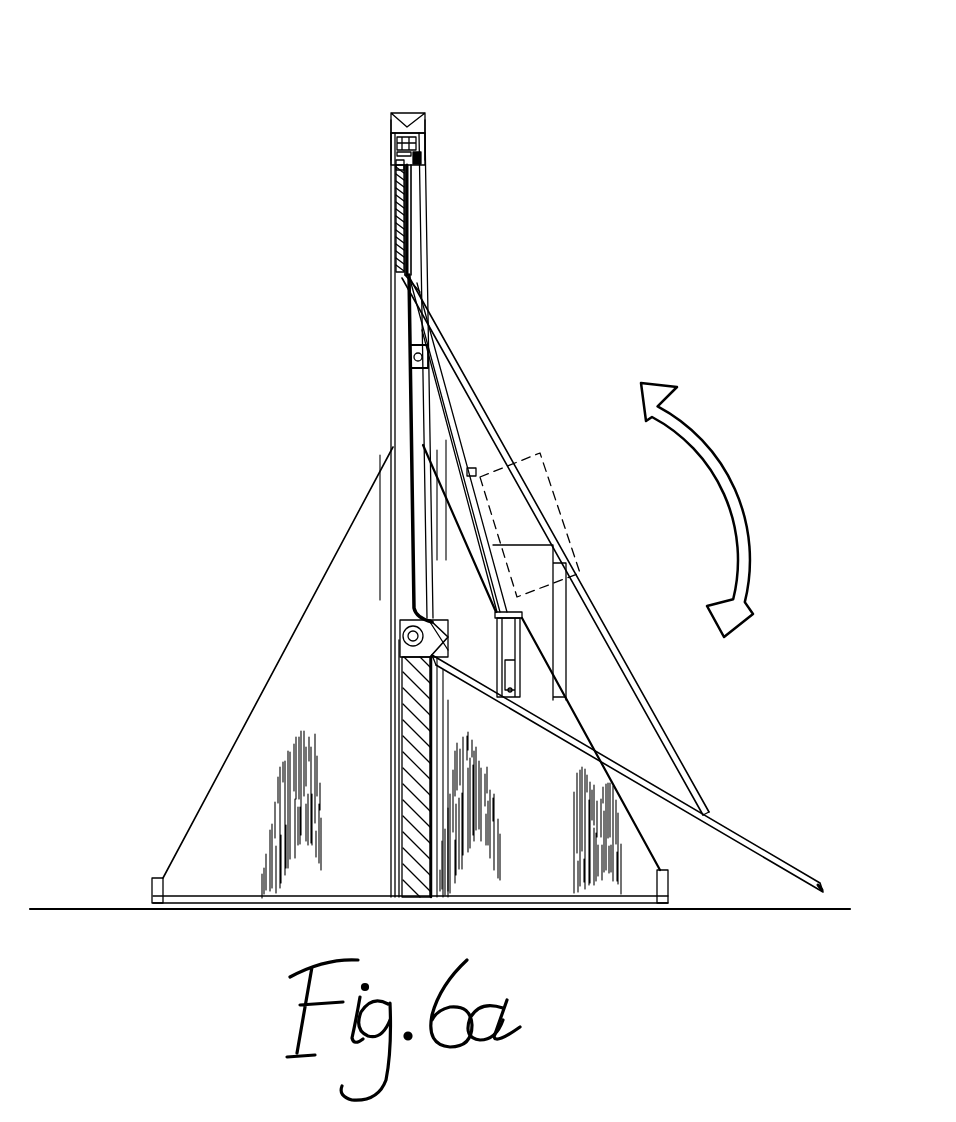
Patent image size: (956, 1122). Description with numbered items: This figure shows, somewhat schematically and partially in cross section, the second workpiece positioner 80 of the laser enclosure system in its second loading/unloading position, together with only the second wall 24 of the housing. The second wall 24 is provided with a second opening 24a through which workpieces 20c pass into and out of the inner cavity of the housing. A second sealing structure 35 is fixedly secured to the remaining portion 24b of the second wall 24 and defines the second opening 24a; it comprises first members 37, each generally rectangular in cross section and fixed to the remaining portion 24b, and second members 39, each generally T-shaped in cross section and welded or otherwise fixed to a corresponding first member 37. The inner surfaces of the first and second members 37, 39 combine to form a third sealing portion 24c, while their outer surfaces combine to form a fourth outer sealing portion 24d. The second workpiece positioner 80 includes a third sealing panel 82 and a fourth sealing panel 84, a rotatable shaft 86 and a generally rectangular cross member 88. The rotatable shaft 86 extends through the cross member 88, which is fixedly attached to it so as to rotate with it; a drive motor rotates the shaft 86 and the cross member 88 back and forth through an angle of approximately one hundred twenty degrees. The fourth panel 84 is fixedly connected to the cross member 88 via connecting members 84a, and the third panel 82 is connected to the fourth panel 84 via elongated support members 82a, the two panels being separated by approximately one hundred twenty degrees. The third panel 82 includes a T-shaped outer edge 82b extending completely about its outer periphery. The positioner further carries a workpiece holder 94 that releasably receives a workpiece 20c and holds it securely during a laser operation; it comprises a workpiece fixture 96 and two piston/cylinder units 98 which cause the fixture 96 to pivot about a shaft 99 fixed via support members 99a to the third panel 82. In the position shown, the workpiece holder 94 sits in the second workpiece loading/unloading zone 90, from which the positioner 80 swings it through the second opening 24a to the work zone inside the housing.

The workpiece 20c is at (550, 476).
The second wall 24 is at (418, 272).
The second opening 24a is at (418, 238).
The remaining portion of the second wall 24b is at (410, 114).
The third sealing portion 24c is at (386, 138).
The fourth outer sealing portion 24d is at (430, 143).
The second sealing structure 35 is at (414, 208).
The first member 37 is at (422, 131).
The second member 39 is at (423, 153).
The second workpiece positioner 80 is at (586, 338).
The third sealing panel 82 is at (400, 418).
The elongated support member 82a is at (597, 628).
The T-shaped outer edge 82b is at (397, 165).
The fourth sealing panel 84 is at (722, 830).
The connecting member 84a is at (437, 665).
The rotatable shaft 86 is at (413, 637).
The cross member 88 is at (437, 628).
The second workpiece loading/unloading zone 90 is at (567, 421).
The workpiece holder 94 is at (463, 476).
The workpiece fixture 96 is at (471, 508).
The piston/cylinder unit 98 is at (508, 690).
The shaft 99 is at (420, 358).
The support member 99a is at (418, 350).